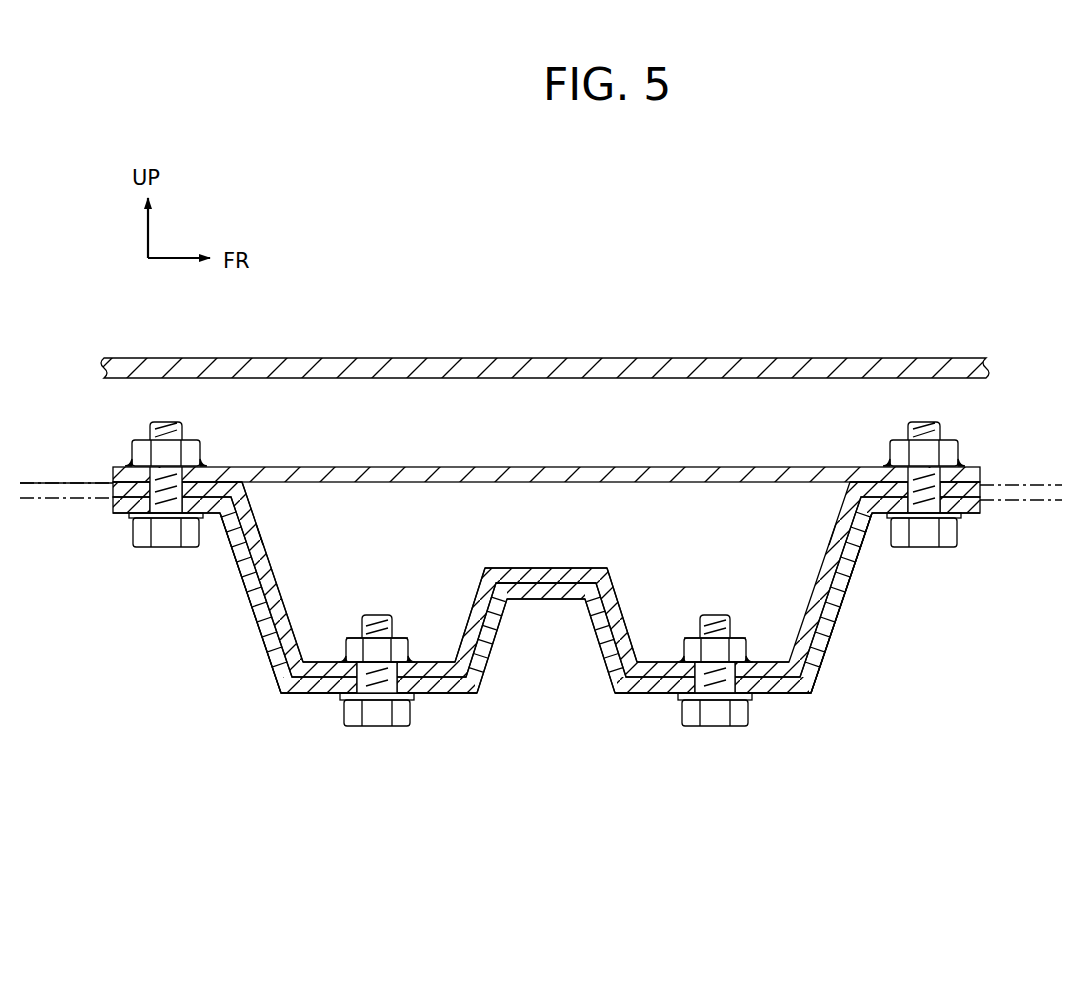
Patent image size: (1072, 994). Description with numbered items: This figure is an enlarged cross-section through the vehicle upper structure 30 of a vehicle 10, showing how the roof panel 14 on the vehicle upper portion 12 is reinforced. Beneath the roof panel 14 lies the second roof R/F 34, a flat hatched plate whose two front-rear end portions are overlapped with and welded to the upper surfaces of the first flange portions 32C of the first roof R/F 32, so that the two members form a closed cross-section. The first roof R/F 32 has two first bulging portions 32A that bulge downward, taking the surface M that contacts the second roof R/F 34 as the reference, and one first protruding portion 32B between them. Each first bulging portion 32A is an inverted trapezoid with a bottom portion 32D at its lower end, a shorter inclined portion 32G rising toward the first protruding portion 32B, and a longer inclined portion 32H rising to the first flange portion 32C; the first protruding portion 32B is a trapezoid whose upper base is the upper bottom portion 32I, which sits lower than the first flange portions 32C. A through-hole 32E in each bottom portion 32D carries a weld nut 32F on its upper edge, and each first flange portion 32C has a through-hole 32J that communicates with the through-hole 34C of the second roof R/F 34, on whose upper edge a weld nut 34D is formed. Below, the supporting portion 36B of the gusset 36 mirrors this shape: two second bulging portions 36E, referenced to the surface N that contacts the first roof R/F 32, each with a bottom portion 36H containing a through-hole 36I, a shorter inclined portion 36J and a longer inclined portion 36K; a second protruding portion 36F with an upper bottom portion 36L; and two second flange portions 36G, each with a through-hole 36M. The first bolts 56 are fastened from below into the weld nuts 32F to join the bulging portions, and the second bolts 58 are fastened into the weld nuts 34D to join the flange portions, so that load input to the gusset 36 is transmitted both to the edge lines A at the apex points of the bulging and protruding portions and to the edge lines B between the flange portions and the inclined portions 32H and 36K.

The vehicle 10 is at (967, 273).
The vehicle upper portion 12 is at (877, 762).
The roof panel 14 is at (553, 355).
The vehicle upper structure 30 is at (915, 624).
The first roof R/F 32 is at (808, 565).
The first bulging portion 32A is at (290, 612).
The first protruding portion 32B is at (525, 563).
The first flange portion 32C is at (113, 470).
The bottom portion 32D is at (433, 670).
The through-hole 32E is at (395, 638).
The weld nut 32F is at (352, 642).
The inclined portion 32G is at (480, 595).
The inclined portion 32H is at (255, 535).
The upper bottom portion 32I is at (558, 568).
The through-hole 32J is at (173, 500).
The second roof R/F 34 is at (568, 466).
The through-hole 34C is at (187, 450).
The weld nut 34D is at (138, 450).
The gusset 36 is at (548, 640).
The supporting portion 36B is at (823, 665).
The second bulging portion 36E is at (295, 703).
The second protruding portion 36F is at (538, 604).
The second flange portion 36G is at (113, 505).
The bottom portion 36H is at (325, 688).
The through-hole 36I is at (387, 690).
The inclined portion 36J is at (486, 698).
The inclined portion 36K is at (257, 612).
The upper bottom portion 36L is at (560, 590).
The through-hole 36M is at (193, 513).
The first bolt 56 is at (353, 720).
The second bolt 58 is at (543, 510).
The edge lines of the ventral surface A is at (296, 696).
The edge lines B is at (213, 527).
The surface M is at (33, 483).
The surface N is at (33, 518).